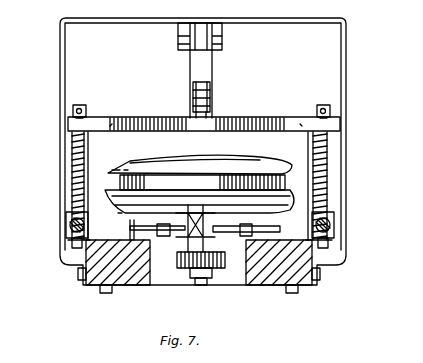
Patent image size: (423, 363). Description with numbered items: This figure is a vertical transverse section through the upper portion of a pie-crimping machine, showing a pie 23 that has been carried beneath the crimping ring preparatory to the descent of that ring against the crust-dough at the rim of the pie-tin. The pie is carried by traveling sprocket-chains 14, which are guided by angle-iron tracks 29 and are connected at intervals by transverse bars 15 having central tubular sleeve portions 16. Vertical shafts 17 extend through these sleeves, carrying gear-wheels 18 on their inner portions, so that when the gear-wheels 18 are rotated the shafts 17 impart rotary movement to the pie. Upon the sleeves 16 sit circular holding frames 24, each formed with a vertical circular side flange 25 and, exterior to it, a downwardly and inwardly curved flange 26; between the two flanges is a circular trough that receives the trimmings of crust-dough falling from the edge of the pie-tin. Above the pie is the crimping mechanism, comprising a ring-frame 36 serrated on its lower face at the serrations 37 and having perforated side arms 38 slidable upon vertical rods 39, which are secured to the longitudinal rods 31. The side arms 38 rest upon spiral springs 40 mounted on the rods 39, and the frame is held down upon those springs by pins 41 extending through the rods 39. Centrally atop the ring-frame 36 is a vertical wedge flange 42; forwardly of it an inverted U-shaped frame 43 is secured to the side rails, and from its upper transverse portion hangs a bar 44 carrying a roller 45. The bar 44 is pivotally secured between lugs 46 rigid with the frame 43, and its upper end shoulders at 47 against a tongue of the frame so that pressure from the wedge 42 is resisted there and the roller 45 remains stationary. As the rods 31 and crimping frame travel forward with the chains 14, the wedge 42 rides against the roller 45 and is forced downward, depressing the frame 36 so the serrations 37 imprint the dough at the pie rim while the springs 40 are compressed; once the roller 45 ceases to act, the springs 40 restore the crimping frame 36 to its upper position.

The sprocket-chains 14 is at (150, 230).
The transverse bars 15 is at (172, 224).
The tubular sleeve portions 16 is at (203, 220).
The vertical shafts 17 is at (202, 284).
The gear-wheels 18 is at (183, 270).
The pie 23 is at (182, 146).
The circular holding frames 24 is at (128, 212).
The vertical circular side flange 25 is at (110, 173).
The downwardly and inwardly curved flange 26 is at (290, 192).
The angle-iron tracks 29 is at (134, 236).
The longitudinal rods 31 is at (66, 228).
The ring-frame 36 is at (268, 118).
The serrations 37 is at (264, 138).
The side arms 38 is at (112, 120).
The vertical rods 39 is at (73, 111).
The spiral springs 40 is at (70, 160).
The pins 41 is at (85, 106).
The vertical wedge flange 42 is at (213, 115).
The inverted U-shaped frame 43 is at (66, 46).
The bar 44 is at (212, 66).
The roller 45 is at (193, 90).
The lugs 46 is at (180, 30).
The shoulder 47 is at (192, 48).